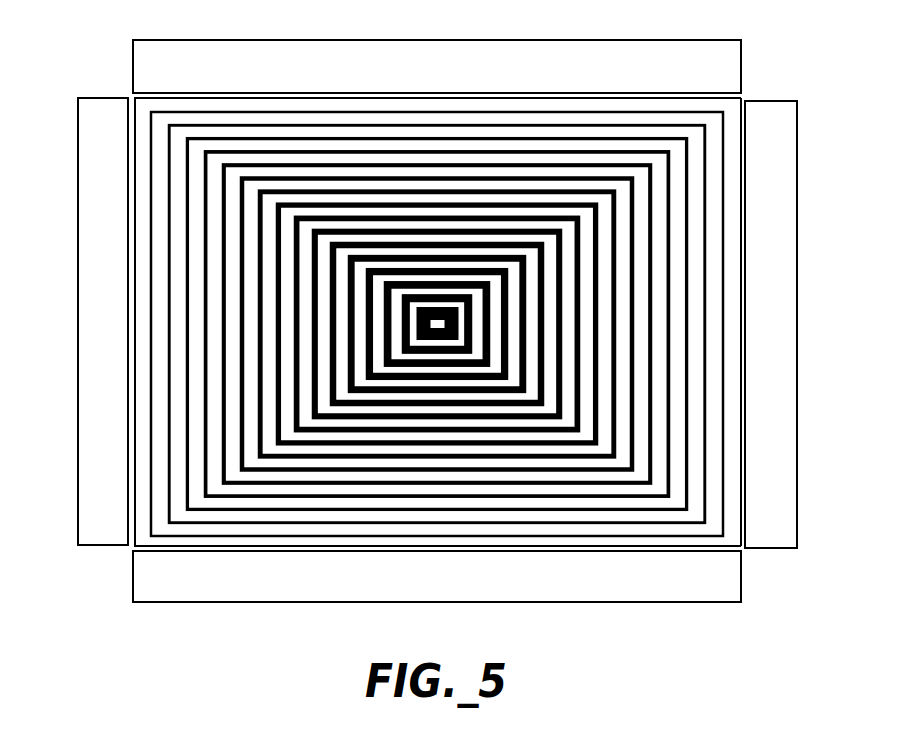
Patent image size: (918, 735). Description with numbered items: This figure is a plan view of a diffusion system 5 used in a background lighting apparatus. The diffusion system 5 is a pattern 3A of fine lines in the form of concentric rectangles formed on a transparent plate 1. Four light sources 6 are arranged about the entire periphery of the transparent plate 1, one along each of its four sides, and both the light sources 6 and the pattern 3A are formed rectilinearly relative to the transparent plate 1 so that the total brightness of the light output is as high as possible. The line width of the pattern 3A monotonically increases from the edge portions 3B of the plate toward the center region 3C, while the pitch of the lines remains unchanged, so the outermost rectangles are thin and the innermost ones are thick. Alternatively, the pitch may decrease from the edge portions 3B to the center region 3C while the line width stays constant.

The transparent plate 1 is at (740, 548).
The pattern 3A is at (470, 153).
The edge portions 3B is at (284, 94).
The center region 3C is at (441, 328).
The diffusion system 5 is at (742, 325).
The light sources 6 is at (741, 50).